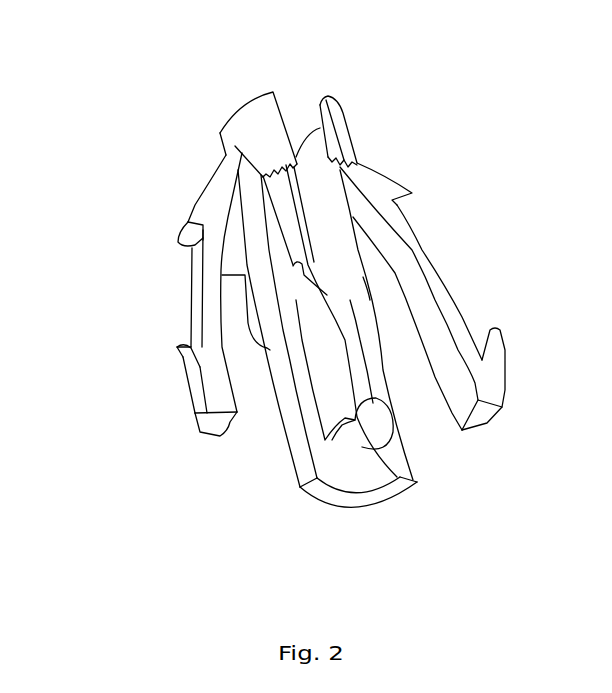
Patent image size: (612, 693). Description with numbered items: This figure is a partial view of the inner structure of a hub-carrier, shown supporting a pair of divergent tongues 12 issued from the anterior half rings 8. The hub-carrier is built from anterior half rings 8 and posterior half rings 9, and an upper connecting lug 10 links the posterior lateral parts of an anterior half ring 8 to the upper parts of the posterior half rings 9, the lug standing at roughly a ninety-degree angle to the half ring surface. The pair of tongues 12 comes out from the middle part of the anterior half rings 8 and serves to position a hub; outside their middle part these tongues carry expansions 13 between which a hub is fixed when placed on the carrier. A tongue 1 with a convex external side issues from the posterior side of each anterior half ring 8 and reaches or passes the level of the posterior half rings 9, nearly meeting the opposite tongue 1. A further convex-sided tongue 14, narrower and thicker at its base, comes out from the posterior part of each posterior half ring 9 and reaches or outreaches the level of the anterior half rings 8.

The tongue with a convex external side 1 is at (325, 318).
The anterior half ring 8 is at (322, 98).
The posterior half ring 9 is at (344, 508).
The upper connecting lug 10 is at (277, 366).
The divergent tongue 12 is at (190, 411).
The expansion 13 is at (181, 360).
The tongue with a convex external side 14 is at (247, 322).